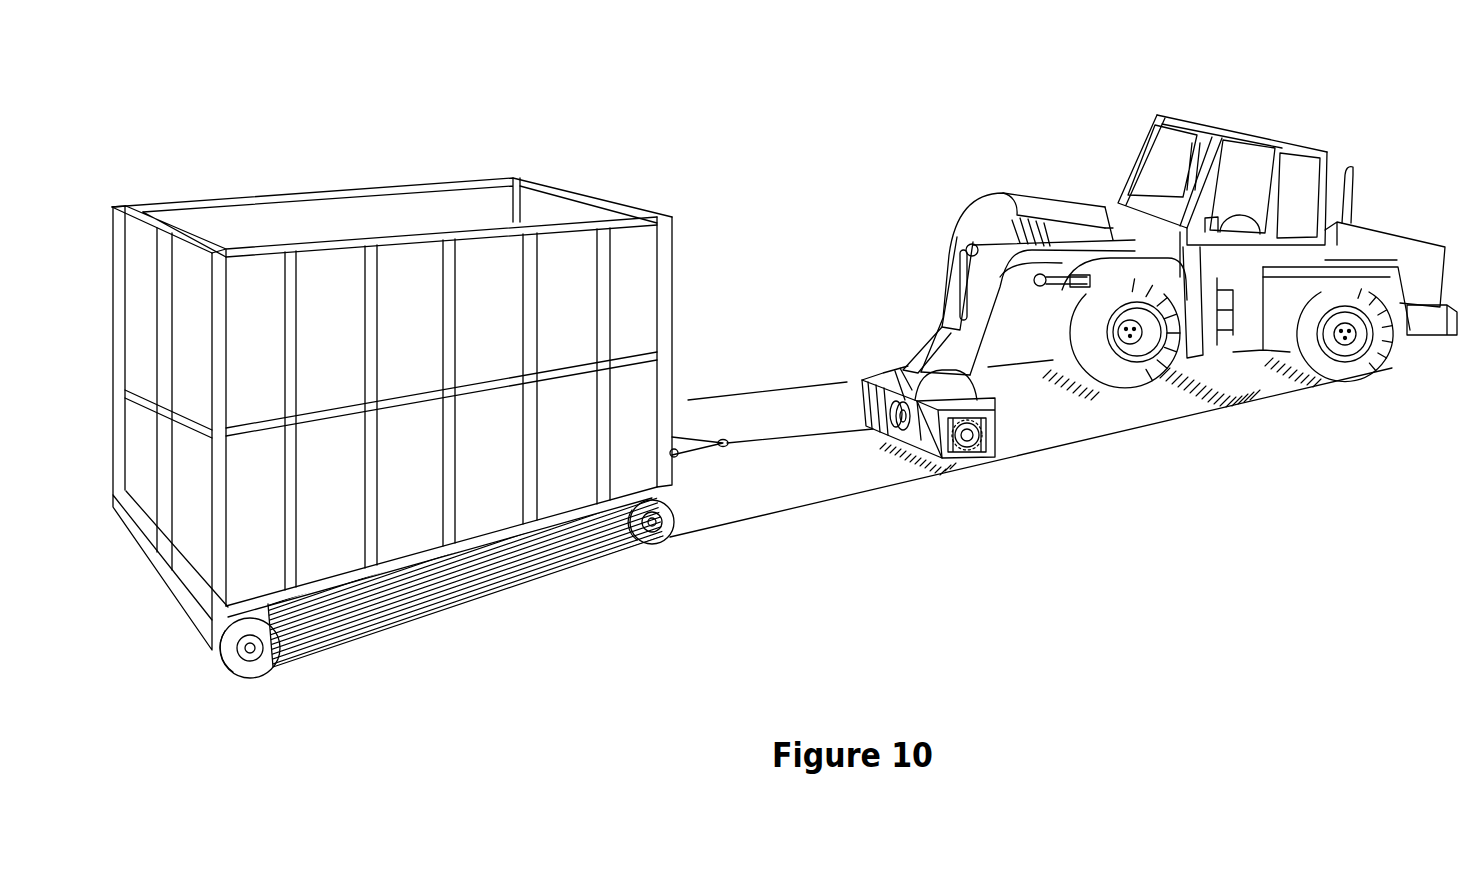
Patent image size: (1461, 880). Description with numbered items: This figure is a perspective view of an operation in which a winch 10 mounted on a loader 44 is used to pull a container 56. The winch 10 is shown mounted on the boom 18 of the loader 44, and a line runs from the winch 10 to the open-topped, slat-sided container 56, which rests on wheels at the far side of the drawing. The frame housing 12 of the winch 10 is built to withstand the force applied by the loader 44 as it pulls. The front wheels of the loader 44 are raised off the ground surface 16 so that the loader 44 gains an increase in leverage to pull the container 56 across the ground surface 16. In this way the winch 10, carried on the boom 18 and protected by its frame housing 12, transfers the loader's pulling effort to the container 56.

The winch 10 is at (991, 442).
The frame housing 12 is at (995, 428).
The ground surface 16 is at (812, 438).
The boom 18 is at (932, 333).
The loader 44 is at (1168, 221).
The container 56 is at (593, 193).